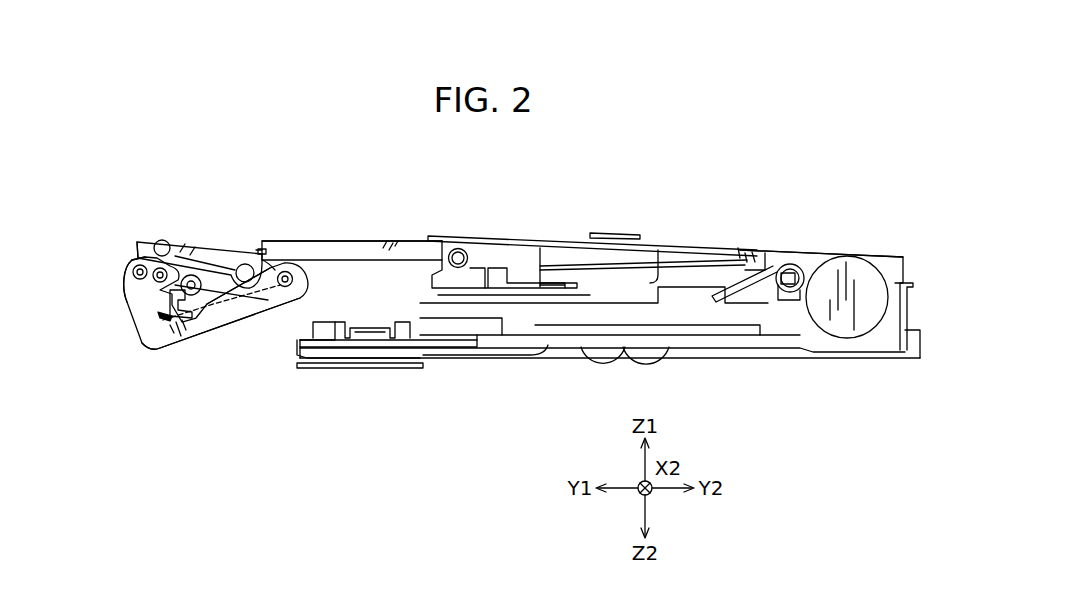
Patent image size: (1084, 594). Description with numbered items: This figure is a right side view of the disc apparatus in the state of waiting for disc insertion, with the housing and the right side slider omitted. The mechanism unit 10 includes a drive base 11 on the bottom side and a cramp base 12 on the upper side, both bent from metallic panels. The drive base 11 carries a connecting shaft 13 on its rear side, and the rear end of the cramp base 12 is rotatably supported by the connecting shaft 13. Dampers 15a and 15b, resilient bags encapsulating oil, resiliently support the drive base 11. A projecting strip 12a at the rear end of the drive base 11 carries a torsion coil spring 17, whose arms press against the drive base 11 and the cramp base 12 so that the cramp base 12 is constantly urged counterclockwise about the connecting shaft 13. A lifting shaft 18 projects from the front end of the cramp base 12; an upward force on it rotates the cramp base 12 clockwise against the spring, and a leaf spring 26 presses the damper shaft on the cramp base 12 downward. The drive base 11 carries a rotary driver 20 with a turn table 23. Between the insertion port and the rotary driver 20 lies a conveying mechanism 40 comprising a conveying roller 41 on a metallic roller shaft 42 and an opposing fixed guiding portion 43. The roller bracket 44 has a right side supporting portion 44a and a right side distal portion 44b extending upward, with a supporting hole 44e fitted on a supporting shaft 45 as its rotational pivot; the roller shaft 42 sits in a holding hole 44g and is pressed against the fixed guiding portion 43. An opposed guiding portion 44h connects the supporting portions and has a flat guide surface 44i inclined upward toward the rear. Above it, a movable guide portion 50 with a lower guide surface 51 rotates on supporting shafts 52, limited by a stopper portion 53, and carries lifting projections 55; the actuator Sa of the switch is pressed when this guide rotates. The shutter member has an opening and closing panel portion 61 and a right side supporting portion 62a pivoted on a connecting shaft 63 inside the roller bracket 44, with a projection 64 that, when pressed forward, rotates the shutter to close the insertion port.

The mechanism unit 10 is at (853, 240).
The drive base 11 is at (771, 350).
The cramp base 12 is at (738, 252).
The projecting strip 12a is at (790, 278).
The connecting shaft 13 is at (884, 255).
The damper 15a is at (847, 312).
The damper 15b is at (312, 330).
The torsion coil spring 17 is at (772, 263).
The lifting shaft 18 is at (460, 246).
The rotary driver 20 is at (600, 280).
The turn table 23 is at (556, 282).
The leaf spring 26 is at (490, 237).
The conveying mechanism 40 is at (322, 272).
The conveying roller 41 is at (268, 250).
The roller shaft 42 is at (295, 270).
The fixed guiding portion 43 is at (355, 251).
The roller bracket 44 is at (142, 348).
The right side supporting portion 44a is at (193, 345).
The right side distal portion 44b is at (133, 306).
The supporting hole 44e is at (140, 262).
The holding hole 44g is at (292, 286).
The opposed guiding portion 44h is at (222, 322).
The guide surface 44i is at (207, 275).
The supporting shaft 45 is at (132, 272).
The movable guide portion 50 is at (183, 252).
The guide surface 51 is at (200, 262).
The supporting shaft 52 is at (162, 240).
The stopper portion 53 is at (148, 242).
The lifting projection 55 is at (247, 264).
The actuator Sa is at (262, 250).
The opening and closing panel portion 61 is at (165, 335).
The right side supporting portion 62a is at (165, 313).
The connecting shaft 63 is at (153, 278).
The projection 64 is at (195, 295).